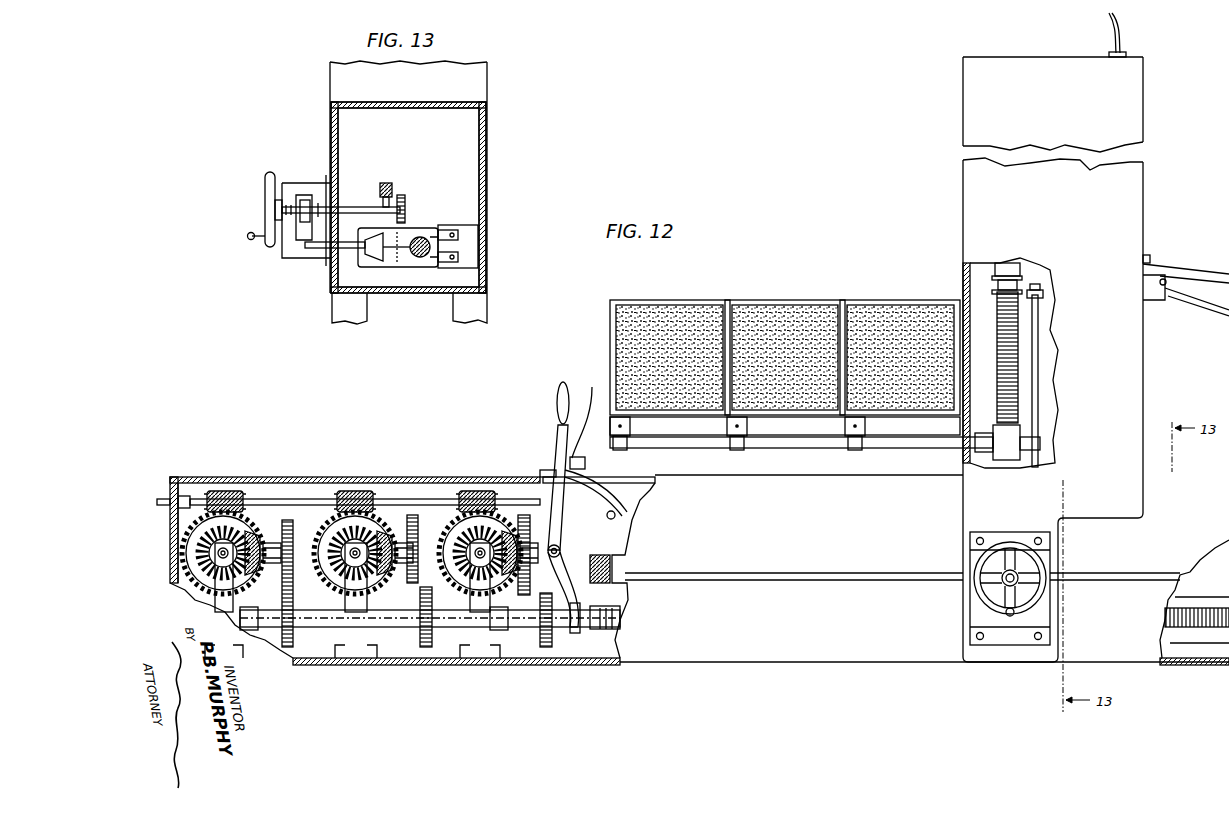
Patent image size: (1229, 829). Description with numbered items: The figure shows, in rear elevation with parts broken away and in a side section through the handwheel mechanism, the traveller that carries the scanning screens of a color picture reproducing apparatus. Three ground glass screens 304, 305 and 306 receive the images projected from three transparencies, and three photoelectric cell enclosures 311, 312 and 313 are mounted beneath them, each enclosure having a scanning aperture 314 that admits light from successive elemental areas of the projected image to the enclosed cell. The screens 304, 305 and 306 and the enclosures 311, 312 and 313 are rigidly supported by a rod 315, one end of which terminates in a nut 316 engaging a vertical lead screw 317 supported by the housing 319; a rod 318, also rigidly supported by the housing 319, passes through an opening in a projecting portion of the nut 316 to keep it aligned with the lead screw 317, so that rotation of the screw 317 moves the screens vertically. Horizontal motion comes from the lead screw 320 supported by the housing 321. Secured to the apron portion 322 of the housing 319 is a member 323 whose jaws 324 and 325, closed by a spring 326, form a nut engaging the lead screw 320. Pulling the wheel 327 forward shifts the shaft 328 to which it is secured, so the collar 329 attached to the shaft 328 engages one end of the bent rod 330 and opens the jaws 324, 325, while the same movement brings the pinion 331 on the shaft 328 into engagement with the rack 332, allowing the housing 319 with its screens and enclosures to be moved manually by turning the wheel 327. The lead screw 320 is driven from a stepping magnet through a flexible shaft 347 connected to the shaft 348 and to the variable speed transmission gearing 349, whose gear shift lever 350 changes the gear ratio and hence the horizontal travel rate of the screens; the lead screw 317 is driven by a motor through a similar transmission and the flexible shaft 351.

In FIG. 12, the ground glass screen 304 is at (661, 305).
In FIG. 12, the ground glass screen 305 is at (773, 306).
In FIG. 12, the ground glass screen 306 is at (888, 306).
In FIG. 12, the photoelectric cell enclosure 311 is at (631, 425).
In FIG. 12, the photoelectric cell enclosure 312 is at (748, 425).
In FIG. 12, the photoelectric cell enclosure 313 is at (866, 425).
In FIG. 12, the scanning aperture 314 is at (727, 425).
In FIG. 12, the rod 315 is at (792, 448).
In FIG. 12, the nut 316 is at (1021, 432).
In FIG. 12, the lead screw 317 is at (1015, 330).
In FIG. 12, the rod 318 is at (1036, 360).
In FIG. 12, the housing 319 is at (1143, 360).
In FIG. 13, the lead screw 320 is at (418, 258).
In FIG. 12, the lead screw 320 is at (622, 602).
In FIG. 12, the housing 321 is at (903, 653).
In FIG. 12, the apron portion 322 is at (970, 514).
In FIG. 13, the member 323 is at (474, 233).
In FIG. 13, the jaw 324 is at (412, 228).
In FIG. 13, the jaw 325 is at (436, 262).
In FIG. 13, the spring 326 is at (395, 260).
In FIG. 13, the wheel 327 is at (265, 180).
In FIG. 12, the wheel 327 is at (980, 583).
In FIG. 13, the shaft 328 is at (352, 207).
In FIG. 13, the collar 329 is at (302, 222).
In FIG. 13, the bent rod 330 is at (312, 248).
In FIG. 13, the pinion 331 is at (407, 202).
In FIG. 13, the rack 332 is at (392, 193).
In FIG. 12, the rack 332 is at (628, 556).
In FIG. 12, the flexible shaft 347 is at (162, 498).
In FIG. 12, the shaft 348 is at (215, 499).
In FIG. 12, the variable speed transmission gearing 349 is at (420, 497).
In FIG. 12, the gear shift lever 350 is at (553, 433).
In FIG. 12, the flexible shaft 351 is at (1110, 26).